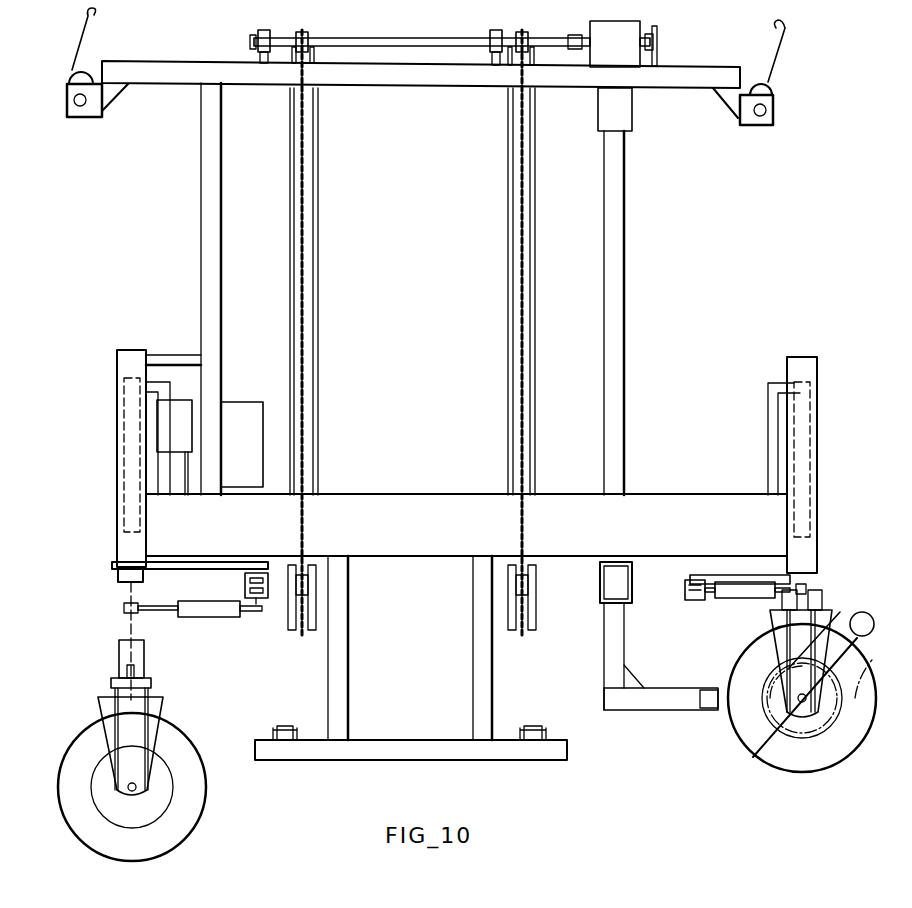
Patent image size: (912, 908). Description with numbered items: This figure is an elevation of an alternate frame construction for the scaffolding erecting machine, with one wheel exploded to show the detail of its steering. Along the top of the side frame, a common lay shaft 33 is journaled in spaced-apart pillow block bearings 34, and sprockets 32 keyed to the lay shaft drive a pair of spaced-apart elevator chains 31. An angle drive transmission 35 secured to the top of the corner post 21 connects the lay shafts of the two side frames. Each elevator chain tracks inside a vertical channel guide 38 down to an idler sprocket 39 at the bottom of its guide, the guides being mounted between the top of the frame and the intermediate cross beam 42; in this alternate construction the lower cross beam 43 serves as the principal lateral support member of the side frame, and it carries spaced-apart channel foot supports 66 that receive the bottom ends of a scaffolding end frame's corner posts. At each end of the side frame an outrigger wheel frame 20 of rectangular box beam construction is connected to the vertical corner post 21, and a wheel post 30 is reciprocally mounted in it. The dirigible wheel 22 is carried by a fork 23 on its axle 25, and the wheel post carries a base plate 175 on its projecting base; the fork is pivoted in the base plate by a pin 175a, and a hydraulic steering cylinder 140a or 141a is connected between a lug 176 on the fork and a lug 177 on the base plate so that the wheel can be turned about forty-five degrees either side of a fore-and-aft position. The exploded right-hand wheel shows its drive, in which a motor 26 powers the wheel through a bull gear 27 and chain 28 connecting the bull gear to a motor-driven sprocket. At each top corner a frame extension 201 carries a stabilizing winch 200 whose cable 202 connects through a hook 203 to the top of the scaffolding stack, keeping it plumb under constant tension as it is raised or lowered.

The outrigger wheel frame 20 is at (116, 419).
The vertical corner post 21 is at (200, 273).
The dirigible wheel 22 is at (192, 832).
The fork 23 is at (106, 727).
The axle 25 is at (131, 792).
The motor 26 is at (874, 613).
The bull gear 27 is at (770, 688).
The chain 28 is at (876, 686).
The post 30 is at (124, 487).
The elevator chain 31 is at (313, 26).
The sprocket 32 is at (298, 32).
The lay shaft 33 is at (402, 38).
The pillow block bearing 34 is at (258, 32).
The angle drive transmission 35 is at (630, 56).
The vertical channel guide 38 is at (289, 210).
The idler sprocket 39 is at (292, 622).
The intermediate cross beam 42 is at (372, 494).
The lower cross beam 43 is at (420, 740).
The channel foot support 66 is at (545, 728).
The steering cylinder 140a is at (214, 612).
The steering cylinder 141a is at (726, 600).
The base plate 175 is at (216, 568).
The pin 175a is at (118, 660).
The lug 176 is at (136, 670).
The lug 177 is at (258, 572).
The stabilizing winch 200 is at (72, 92).
The frame extension 201 is at (421, 75).
The cable 202 is at (74, 46).
The hook 203 is at (84, 14).